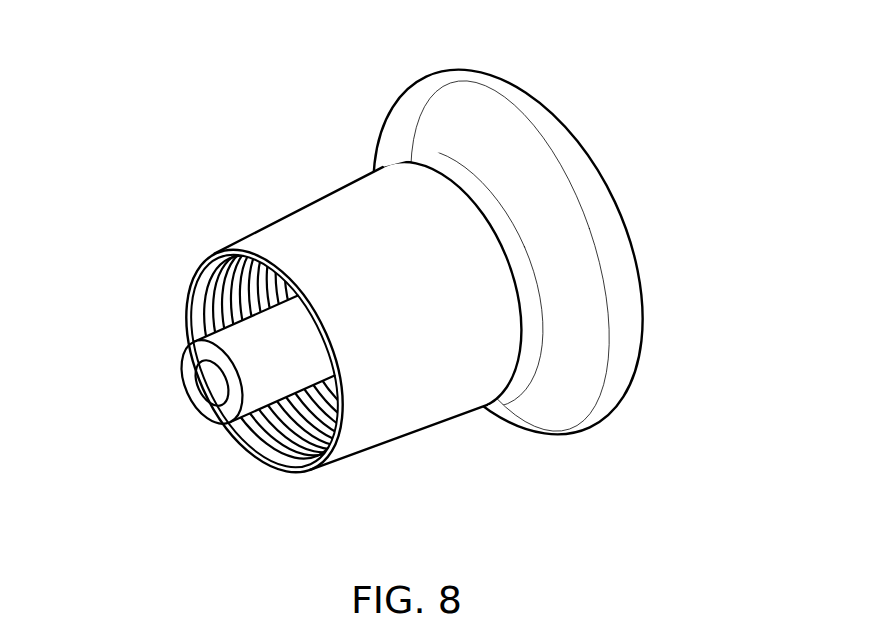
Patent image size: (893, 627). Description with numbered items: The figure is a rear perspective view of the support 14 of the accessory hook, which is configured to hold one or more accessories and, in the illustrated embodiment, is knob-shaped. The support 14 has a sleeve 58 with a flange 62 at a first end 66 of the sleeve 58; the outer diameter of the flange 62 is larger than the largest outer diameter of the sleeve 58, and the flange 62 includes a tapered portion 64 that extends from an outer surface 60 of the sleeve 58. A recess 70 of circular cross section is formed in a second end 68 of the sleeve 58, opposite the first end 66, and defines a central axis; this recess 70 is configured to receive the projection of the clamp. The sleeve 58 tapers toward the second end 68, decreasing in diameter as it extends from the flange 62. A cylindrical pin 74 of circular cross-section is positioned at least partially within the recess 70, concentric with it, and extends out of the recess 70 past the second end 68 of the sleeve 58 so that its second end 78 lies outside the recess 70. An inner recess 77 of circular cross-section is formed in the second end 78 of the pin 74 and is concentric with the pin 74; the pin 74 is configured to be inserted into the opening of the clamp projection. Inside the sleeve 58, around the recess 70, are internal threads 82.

The support 14 is at (608, 47).
The sleeve 58 is at (377, 403).
The outer surface 60 is at (482, 368).
The flange 62 is at (609, 225).
The tapered portion 64 is at (552, 402).
The first end 66 is at (421, 163).
The second end 68 is at (227, 253).
The recess 70 is at (218, 292).
The pin 74 is at (240, 340).
The inner recess 77 is at (212, 387).
The second end 78 is at (213, 410).
The threads 82 is at (311, 398).